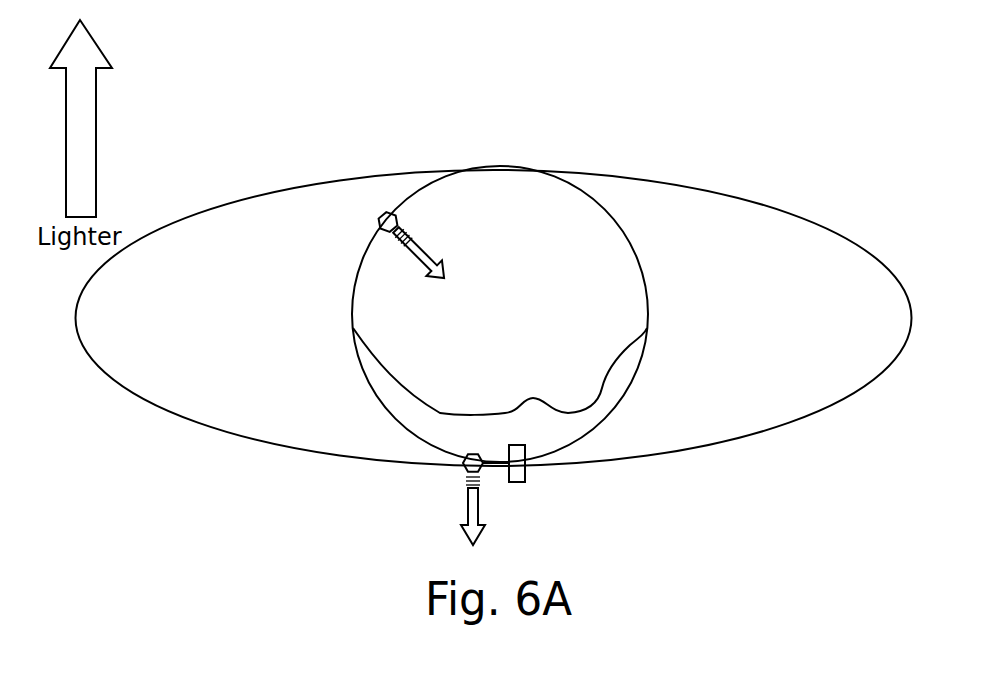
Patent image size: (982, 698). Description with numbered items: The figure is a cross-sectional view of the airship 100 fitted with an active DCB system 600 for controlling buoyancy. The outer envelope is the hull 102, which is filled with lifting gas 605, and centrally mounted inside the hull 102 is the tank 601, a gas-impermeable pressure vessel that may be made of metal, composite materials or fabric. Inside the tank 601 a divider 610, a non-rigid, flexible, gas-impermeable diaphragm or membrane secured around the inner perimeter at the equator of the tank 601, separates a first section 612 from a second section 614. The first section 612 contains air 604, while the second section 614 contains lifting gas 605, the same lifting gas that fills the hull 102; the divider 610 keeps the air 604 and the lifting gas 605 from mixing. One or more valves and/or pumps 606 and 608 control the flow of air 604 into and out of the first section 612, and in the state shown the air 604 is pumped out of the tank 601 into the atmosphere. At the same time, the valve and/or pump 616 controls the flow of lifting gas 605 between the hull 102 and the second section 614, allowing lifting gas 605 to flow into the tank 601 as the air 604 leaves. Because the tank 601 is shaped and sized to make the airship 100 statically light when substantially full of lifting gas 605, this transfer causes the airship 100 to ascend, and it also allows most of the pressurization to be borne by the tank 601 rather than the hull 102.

The airship 100 is at (218, 173).
The hull 102 is at (753, 200).
The DCB system 600 is at (266, 318).
The tank 601 is at (623, 235).
The air 604 is at (500, 444).
The lifting gas 605 is at (517, 266).
The valve and/or pump 606 is at (522, 470).
The valve and/or pump 608 is at (465, 467).
The divider 610 is at (412, 392).
The first section 612 is at (395, 396).
The second section 614 is at (380, 282).
The valve and/or pump 616 is at (390, 211).